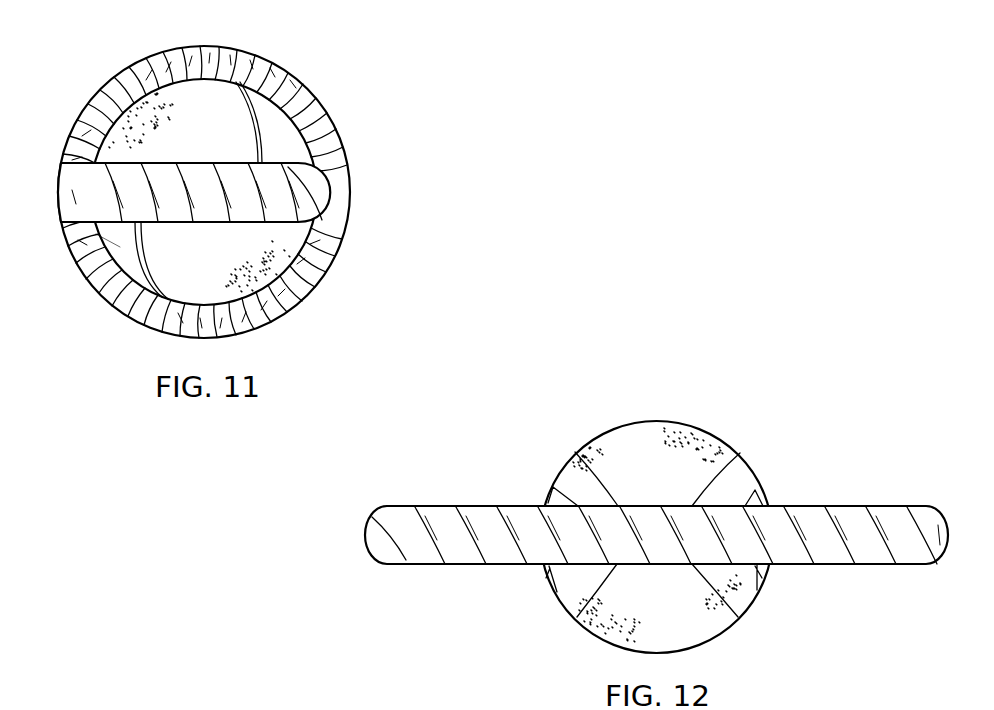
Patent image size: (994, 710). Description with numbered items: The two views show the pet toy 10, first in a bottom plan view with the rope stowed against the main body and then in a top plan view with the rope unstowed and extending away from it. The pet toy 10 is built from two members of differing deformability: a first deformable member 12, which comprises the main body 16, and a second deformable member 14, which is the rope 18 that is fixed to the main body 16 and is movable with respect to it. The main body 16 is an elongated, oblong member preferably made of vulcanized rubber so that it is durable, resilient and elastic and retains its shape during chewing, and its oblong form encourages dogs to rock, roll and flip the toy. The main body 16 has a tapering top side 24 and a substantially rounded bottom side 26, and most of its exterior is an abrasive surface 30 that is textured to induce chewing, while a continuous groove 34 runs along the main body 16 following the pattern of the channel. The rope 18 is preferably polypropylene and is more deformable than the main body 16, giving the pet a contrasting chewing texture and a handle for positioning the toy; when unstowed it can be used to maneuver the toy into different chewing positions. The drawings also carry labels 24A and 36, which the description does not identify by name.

In FIG. 11, the pet toy 10 is at (436, 98).
In FIG. 12, the pet toy 10 is at (541, 406).
In FIG. 11, the first deformable member 12 is at (157, 82).
In FIG. 12, the first deformable member 12 is at (606, 403).
In FIG. 11, the second deformable member 14 is at (340, 291).
In FIG. 12, the second deformable member 14 is at (915, 584).
In FIG. 11, the main body 16 is at (272, 240).
In FIG. 12, the main body 16 is at (665, 436).
In FIG. 11, the rope 18 is at (318, 183).
In FIG. 12, the rope 18 is at (860, 533).
In FIG. 12, the top side 24 is at (616, 594).
In FIG. 12, the strip edges 24A is at (550, 493).
In FIG. 11, the bottom side 26 is at (197, 257).
In FIG. 11, the abrasive surface 30 is at (125, 140).
In FIG. 12, the abrasive surface 30 is at (702, 438).
In FIG. 11, the continuous groove 34 is at (262, 93).
In FIG. 11, the strip edge 36 is at (120, 247).
In FIG. 12, the strip edge 36 is at (733, 477).